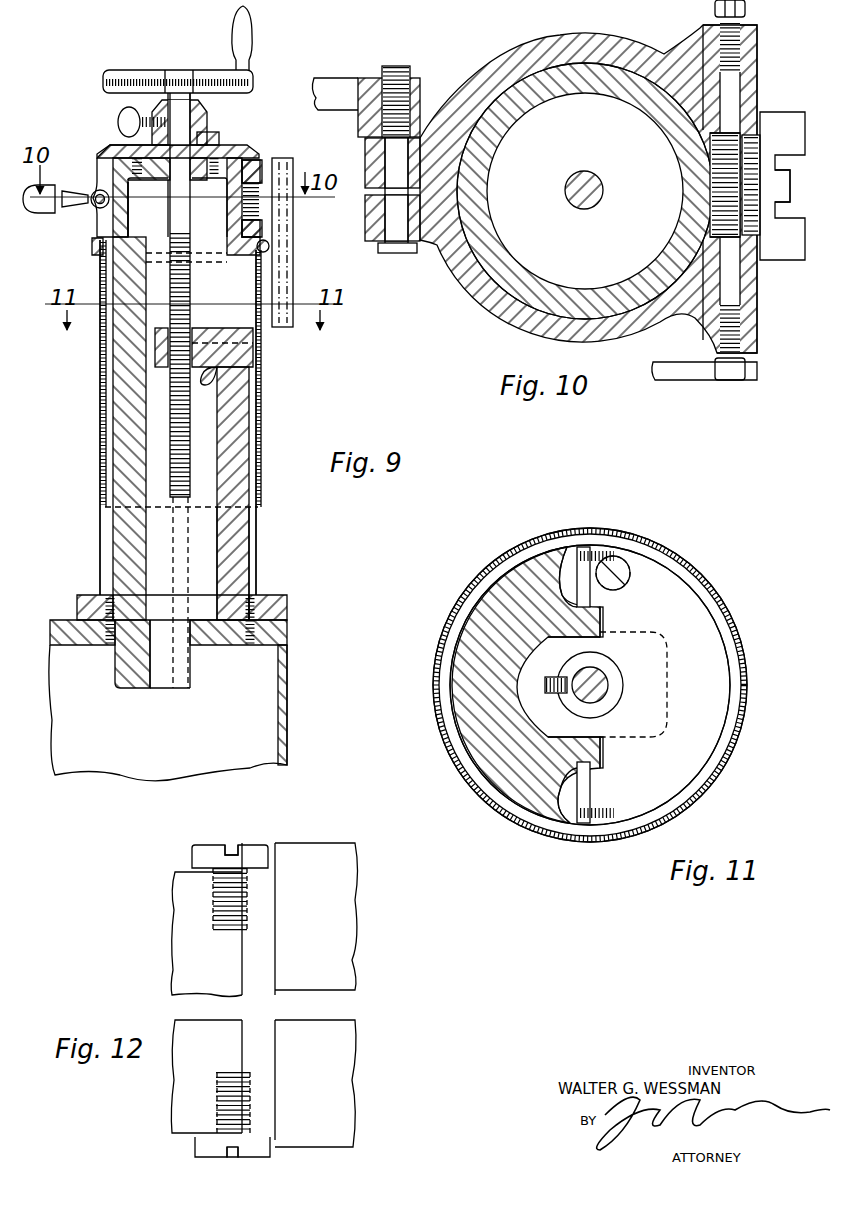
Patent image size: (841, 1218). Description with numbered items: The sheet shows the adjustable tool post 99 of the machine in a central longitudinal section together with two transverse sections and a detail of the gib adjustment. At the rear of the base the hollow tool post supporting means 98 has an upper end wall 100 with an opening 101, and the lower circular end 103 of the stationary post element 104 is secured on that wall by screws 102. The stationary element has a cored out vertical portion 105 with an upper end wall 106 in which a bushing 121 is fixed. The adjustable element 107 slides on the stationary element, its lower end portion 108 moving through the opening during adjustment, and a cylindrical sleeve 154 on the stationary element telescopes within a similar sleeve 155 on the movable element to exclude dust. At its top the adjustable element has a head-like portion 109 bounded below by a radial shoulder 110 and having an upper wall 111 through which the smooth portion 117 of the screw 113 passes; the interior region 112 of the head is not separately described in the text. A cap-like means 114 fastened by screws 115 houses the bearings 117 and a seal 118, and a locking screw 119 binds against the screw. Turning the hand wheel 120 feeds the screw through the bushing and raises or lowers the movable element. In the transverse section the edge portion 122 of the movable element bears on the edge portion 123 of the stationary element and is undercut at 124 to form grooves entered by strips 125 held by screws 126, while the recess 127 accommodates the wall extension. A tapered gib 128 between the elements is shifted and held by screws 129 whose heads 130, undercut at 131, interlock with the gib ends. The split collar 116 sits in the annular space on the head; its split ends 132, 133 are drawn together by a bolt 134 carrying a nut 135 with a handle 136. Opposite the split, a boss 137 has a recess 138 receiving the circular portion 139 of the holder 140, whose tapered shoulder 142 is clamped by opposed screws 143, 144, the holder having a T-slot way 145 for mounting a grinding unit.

In FIG. 9, the tool post supporting means 98 is at (290, 697).
In FIG. 9, the tool post 99 is at (273, 412).
In FIG. 11, the tool post 99 is at (731, 586).
In FIG. 9, the upper end wall 100 is at (232, 634).
In FIG. 9, the opening 101 is at (199, 642).
In FIG. 9, the screws 102 is at (270, 590).
In FIG. 9, the lower circular end 103 is at (289, 606).
In FIG. 9, the stationary post element 104 is at (241, 532).
In FIG. 11, the stationary post element 104 is at (706, 708).
In FIG. 12, the stationary post element 104 is at (165, 935).
In FIG. 9, the cored out vertical portion 105 is at (243, 438).
In FIG. 9, the upper end wall 106 is at (212, 374).
In FIG. 11, the upper end wall 106 is at (717, 655).
In FIG. 9, the adjustable element 107 is at (154, 412).
In FIG. 12, the adjustable element 107 is at (331, 928).
In FIG. 9, the lower end portion 108 is at (161, 686).
In FIG. 9, the head-like portion 109 is at (107, 139).
In FIG. 10, the head-like portion 109 is at (598, 96).
In FIG. 9, the radial shoulder 110 is at (98, 232).
In FIG. 9, the upper wall 111 is at (209, 176).
In FIG. 9, the cavity 112 is at (174, 186).
In FIG. 9, the screw 113 is at (197, 288).
In FIG. 10, the screw 113 is at (587, 169).
In FIG. 11, the screw 113 is at (611, 681).
In FIG. 9, the cap-like means 114 is at (207, 112).
In FIG. 9, the screws 115 is at (108, 146).
In FIG. 9, the split collar 116 is at (95, 166).
In FIG. 10, the split collar 116 is at (530, 44).
In FIG. 9, the bearings 117 is at (212, 134).
In FIG. 9, the seal 118 is at (163, 98).
In FIG. 9, the locking screw 119 is at (124, 110).
In FIG. 9, the hand wheel 120 is at (191, 68).
In FIG. 9, the bushing 121 is at (197, 328).
In FIG. 11, the bushing 121 is at (605, 701).
In FIG. 11, the edge portion 122 is at (605, 614).
In FIG. 11, the edge portion 123 is at (603, 640).
In FIG. 11, the undercut 124 is at (568, 560).
In FIG. 11, the strips 125 is at (590, 560).
In FIG. 11, the screws 126 is at (613, 552).
In FIG. 11, the recess 127 is at (526, 700).
In FIG. 11, the tapered gib 128 is at (622, 578).
In FIG. 12, the tapered gib 128 is at (268, 920).
In FIG. 11, the screw 129 is at (633, 561).
In FIG. 12, the screw 129 is at (211, 838).
In FIG. 12, the head 130 is at (261, 847).
In FIG. 12, the undercut 131 is at (240, 850).
In FIG. 10, the split end 132 is at (366, 223).
In FIG. 10, the split end 133 is at (366, 165).
In FIG. 9, the bolt 134 is at (93, 206).
In FIG. 10, the bolt 134 is at (396, 240).
In FIG. 10, the nut 135 is at (419, 80).
In FIG. 9, the handle 136 is at (36, 214).
In FIG. 10, the handle 136 is at (341, 82).
In FIG. 9, the boss 137 is at (262, 160).
In FIG. 10, the boss 137 is at (753, 62).
In FIG. 10, the recess 138 is at (716, 133).
In FIG. 10, the circular portion 139 is at (758, 224).
In FIG. 9, the holder 140 is at (286, 272).
In FIG. 10, the holder 140 is at (795, 103).
In FIG. 10, the tapered shoulder 142 is at (736, 234).
In FIG. 10, the screw 143 is at (746, 16).
In FIG. 10, the screw 144 is at (746, 338).
In FIG. 9, the way 145 is at (291, 216).
In FIG. 10, the way 145 is at (791, 200).
In FIG. 9, the cylindrical sleeve 154 is at (100, 549).
In FIG. 11, the cylindrical sleeve 154 is at (448, 628).
In FIG. 9, the sleeve 155 is at (100, 470).
In FIG. 11, the sleeve 155 is at (468, 586).